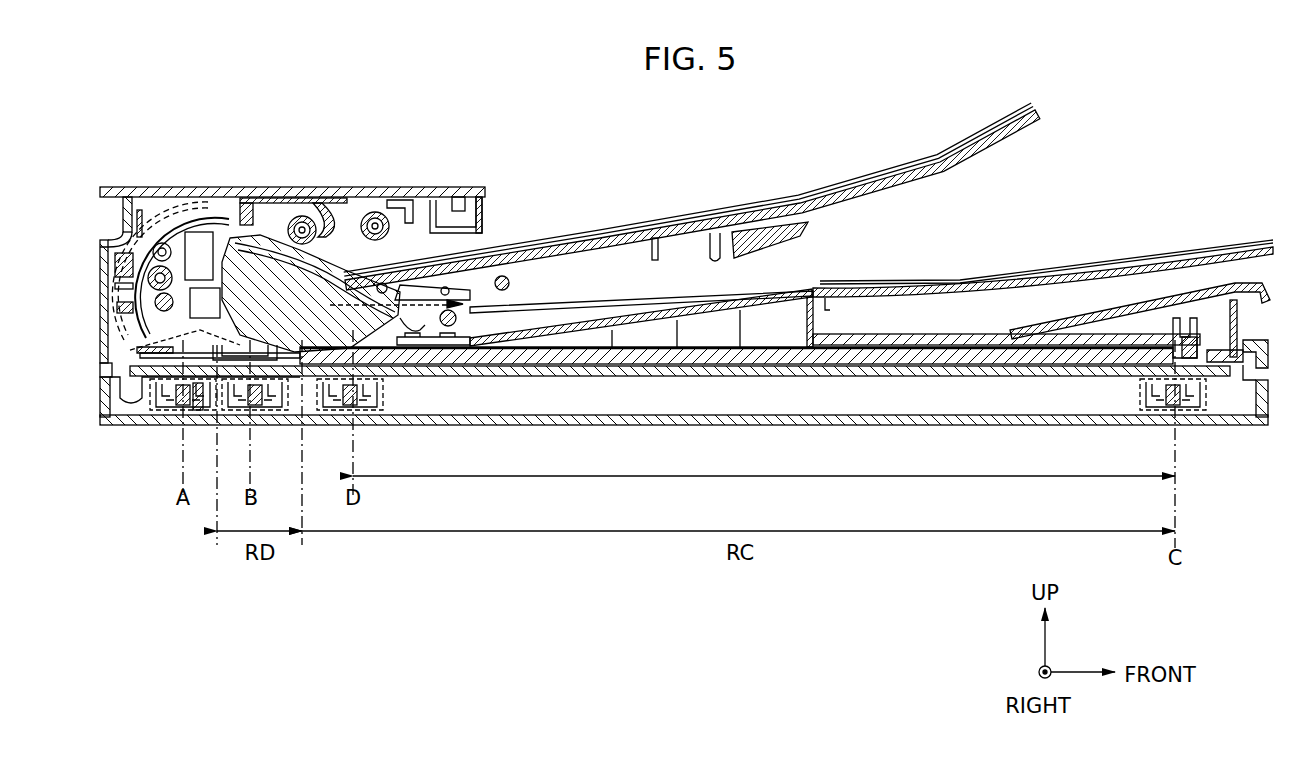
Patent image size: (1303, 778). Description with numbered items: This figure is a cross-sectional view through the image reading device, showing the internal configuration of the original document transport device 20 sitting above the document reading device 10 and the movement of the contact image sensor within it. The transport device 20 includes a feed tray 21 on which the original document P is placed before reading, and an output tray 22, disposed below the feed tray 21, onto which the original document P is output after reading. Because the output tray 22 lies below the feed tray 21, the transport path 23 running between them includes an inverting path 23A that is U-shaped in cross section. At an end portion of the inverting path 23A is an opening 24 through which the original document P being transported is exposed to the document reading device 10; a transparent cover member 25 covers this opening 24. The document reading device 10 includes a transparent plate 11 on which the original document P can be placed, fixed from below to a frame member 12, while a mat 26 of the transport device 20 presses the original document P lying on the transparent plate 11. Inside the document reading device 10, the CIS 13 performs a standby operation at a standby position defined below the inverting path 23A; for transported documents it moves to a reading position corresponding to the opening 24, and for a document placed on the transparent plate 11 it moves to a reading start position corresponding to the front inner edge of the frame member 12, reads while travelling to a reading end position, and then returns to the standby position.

The document reading device 10 is at (106, 405).
The transparent plate 11 is at (590, 370).
The frame member 12 is at (107, 368).
The CIS 13 is at (170, 411).
The original document transport device 20 is at (271, 187).
The feed tray 21 is at (1000, 148).
The output tray 22 is at (958, 291).
The transport path 23 is at (193, 199).
The inverting path 23A is at (108, 238).
The opening 24 is at (290, 398).
The transparent cover member 25 is at (199, 410).
The mat 26 is at (742, 374).
The original document P is at (897, 183).